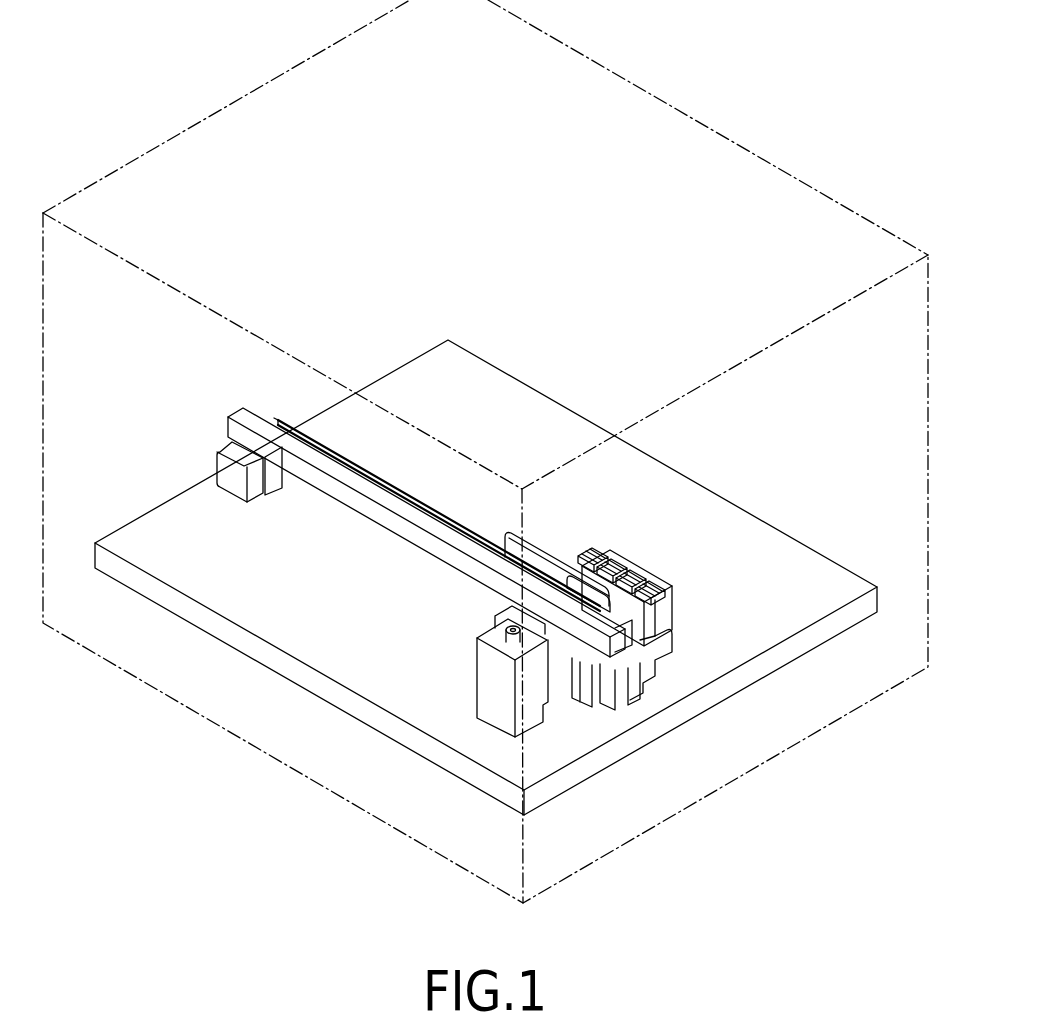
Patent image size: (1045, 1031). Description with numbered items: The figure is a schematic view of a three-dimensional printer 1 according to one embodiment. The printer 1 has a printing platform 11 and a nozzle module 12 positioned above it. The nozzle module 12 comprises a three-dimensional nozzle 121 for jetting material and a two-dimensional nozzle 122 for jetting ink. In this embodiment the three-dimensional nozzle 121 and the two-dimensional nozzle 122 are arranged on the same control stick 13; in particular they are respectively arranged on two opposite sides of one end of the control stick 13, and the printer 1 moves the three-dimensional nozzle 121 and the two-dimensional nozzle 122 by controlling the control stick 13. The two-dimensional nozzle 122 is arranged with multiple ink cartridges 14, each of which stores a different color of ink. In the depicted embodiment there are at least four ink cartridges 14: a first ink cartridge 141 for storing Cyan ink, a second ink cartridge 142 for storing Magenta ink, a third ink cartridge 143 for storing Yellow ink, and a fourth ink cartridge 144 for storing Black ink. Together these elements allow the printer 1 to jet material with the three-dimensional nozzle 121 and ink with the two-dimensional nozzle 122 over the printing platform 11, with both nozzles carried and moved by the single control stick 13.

The printer 1 is at (690, 82).
The printing platform 11 is at (787, 652).
The nozzle module 12 is at (635, 705).
The 3D nozzle 121 is at (535, 692).
The 2D nozzle 122 is at (652, 655).
The control stick 13 is at (377, 512).
The ink cartridges 14 is at (704, 533).
The first ink cartridge 141 is at (647, 587).
The second ink cartridge 142 is at (630, 573).
The third ink cartridge 143 is at (612, 557).
The fourth ink cartridge 144 is at (593, 543).